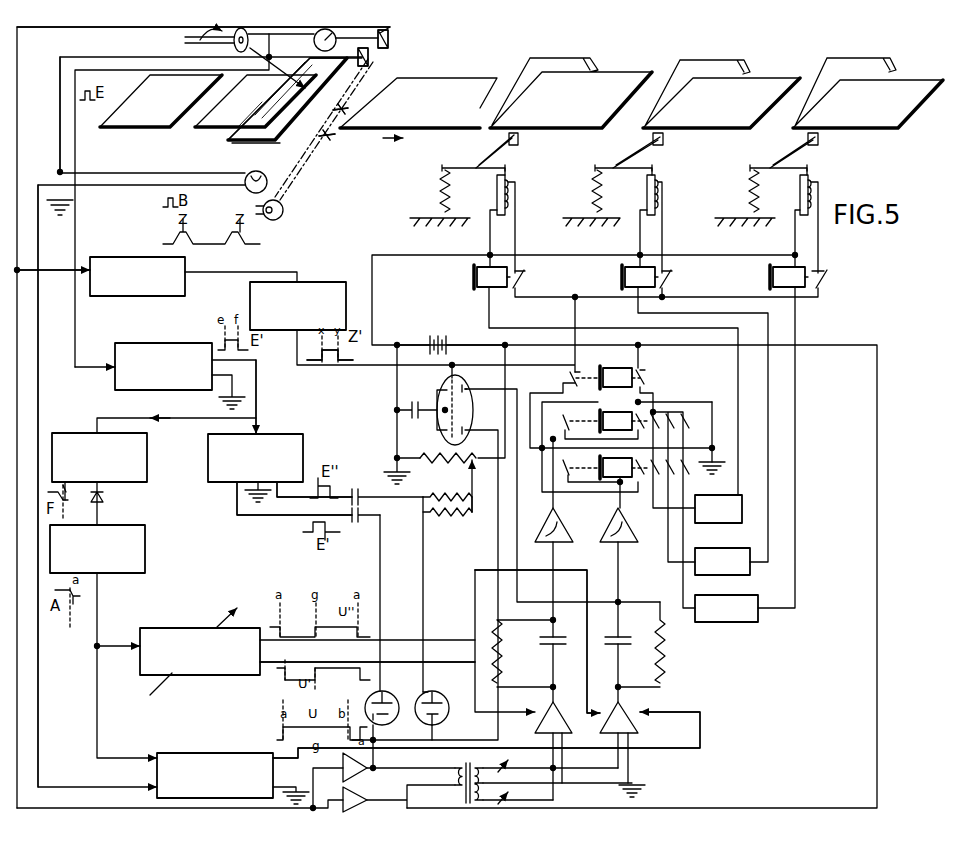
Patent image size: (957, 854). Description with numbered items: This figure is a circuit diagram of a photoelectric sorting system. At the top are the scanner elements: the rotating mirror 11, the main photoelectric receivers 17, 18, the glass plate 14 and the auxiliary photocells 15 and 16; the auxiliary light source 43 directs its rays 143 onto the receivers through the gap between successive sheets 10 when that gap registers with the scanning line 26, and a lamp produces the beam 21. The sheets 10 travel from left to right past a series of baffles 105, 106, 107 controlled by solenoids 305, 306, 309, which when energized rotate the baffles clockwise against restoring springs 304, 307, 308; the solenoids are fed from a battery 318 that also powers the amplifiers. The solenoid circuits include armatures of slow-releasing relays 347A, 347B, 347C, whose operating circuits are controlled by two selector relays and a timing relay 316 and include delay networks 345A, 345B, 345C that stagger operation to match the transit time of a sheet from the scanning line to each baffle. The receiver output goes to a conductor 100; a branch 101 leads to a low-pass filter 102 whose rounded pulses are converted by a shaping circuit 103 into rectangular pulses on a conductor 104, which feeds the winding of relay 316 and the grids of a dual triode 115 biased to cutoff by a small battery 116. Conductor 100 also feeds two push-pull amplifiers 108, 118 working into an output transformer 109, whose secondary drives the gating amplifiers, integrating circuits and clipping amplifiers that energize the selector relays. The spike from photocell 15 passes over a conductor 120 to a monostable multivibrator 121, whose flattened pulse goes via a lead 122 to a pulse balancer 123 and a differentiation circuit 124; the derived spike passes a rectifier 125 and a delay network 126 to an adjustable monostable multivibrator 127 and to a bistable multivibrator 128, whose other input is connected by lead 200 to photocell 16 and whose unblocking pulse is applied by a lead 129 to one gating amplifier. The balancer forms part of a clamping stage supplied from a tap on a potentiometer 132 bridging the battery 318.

The conductor 100 is at (88, 28).
The rotating mirror 11 is at (248, 40).
The auxiliary photocell 15 is at (339, 39).
The main photoelectric receiver 17 is at (388, 38).
The main photoelectric receiver 18 is at (370, 57).
The beam 21 is at (276, 68).
The glass plate 14 is at (230, 139).
The auxiliary photocell 16 is at (251, 171).
The scanning line 26 is at (326, 131).
The rays 143 is at (311, 161).
The auxiliary light source 43 is at (283, 210).
The conductor 120 is at (76, 157).
The branch 101 is at (45, 275).
The lead 200 is at (40, 378).
The low-pass filter 102 is at (128, 257).
The shaping circuit 103 is at (323, 282).
The conductor 104 is at (362, 365).
The monostable multivibrator 121 is at (162, 343).
The lead 122 is at (257, 372).
The pulse balancer 123 is at (290, 434).
The differentiation circuit 124 is at (67, 433).
The rectifier 125 is at (103, 497).
The delay network 126 is at (145, 550).
The adjustable monostable multivibrator 127 is at (148, 628).
The bistable multivibrator 128 is at (175, 753).
The potentiometer 132 is at (432, 456).
The small battery 116 is at (415, 402).
The dual triode 115 is at (467, 378).
The battery 318 is at (446, 342).
The sheet 10 is at (486, 72).
The baffle 105 is at (556, 58).
The baffle 106 is at (710, 60).
The baffle 107 is at (852, 58).
The restoring spring 304 is at (441, 192).
The solenoid 305 is at (488, 220).
The restoring spring 307 is at (594, 192).
The solenoid 306 is at (636, 220).
The restoring spring 308 is at (751, 192).
The solenoid 309 is at (790, 220).
The slow-releasing relay 347A is at (470, 277).
The slow-releasing relay 347B is at (617, 277).
The slow-releasing relay 347C is at (765, 277).
The timing relay 316 is at (633, 368).
The delay network 345A is at (735, 494).
The delay network 345B is at (745, 548).
The delay network 345C is at (747, 595).
The lead 129 is at (700, 732).
The output transformer 109 is at (465, 770).
The amplifier 108 is at (360, 778).
The amplifier 118 is at (360, 810).